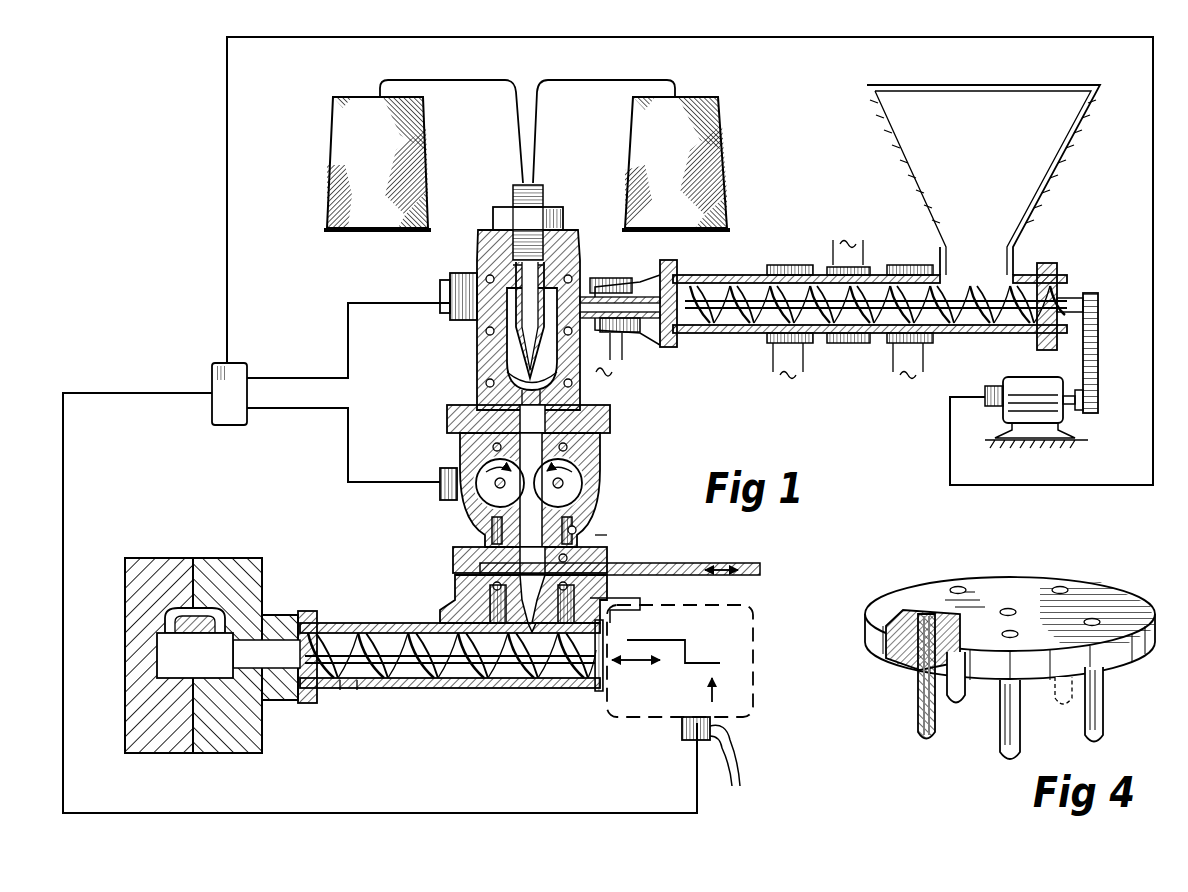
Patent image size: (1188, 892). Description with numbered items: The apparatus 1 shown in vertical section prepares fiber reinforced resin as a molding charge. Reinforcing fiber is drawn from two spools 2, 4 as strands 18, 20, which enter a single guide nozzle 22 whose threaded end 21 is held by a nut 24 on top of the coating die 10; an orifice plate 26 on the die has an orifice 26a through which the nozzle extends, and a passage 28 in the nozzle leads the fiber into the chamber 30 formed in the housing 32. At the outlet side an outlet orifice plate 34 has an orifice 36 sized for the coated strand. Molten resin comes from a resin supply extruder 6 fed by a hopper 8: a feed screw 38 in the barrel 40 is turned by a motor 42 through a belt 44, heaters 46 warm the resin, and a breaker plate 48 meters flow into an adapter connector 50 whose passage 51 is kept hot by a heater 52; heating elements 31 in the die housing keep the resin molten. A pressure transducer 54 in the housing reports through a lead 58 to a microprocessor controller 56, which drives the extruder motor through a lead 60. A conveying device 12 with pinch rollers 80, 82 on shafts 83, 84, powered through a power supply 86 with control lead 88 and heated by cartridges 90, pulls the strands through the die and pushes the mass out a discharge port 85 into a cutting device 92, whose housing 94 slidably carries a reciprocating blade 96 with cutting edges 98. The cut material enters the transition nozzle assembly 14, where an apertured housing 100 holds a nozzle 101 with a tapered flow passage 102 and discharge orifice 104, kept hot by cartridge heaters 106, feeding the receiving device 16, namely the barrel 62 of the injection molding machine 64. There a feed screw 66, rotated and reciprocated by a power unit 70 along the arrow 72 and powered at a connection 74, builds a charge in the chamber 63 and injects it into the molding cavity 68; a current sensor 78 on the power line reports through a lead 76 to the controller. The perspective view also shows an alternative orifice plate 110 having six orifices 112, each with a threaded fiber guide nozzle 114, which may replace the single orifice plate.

In FIG. 1, the apparatus 1 is at (152, 138).
In FIG. 1, the spool of fiber 2 is at (330, 100).
In FIG. 1, the spool of fiber 4 is at (728, 112).
In FIG. 1, the resin supply extruder 6 is at (1062, 274).
In FIG. 1, the feed hopper 8 is at (972, 85).
In FIG. 1, the coating die 10 is at (470, 250).
In FIG. 1, the fiber and resin conveying device 12 is at (445, 428).
In FIG. 1, the transition nozzle assembly 14 is at (455, 595).
In FIG. 1, the receiving device 16 is at (406, 703).
In FIG. 1, the fiber strand 18 is at (459, 80).
In FIG. 1, the fiber strand 20 is at (591, 80).
In FIG. 1, the threaded end 21 is at (531, 185).
In FIG. 1, the guide nozzle 22 is at (514, 322).
In FIG. 1, the nut 24 is at (550, 207).
In FIG. 1, the orifice plate 26 is at (492, 236).
In FIG. 1, the orifice 26a is at (521, 235).
In FIG. 1, the passage 28 is at (530, 395).
In FIG. 1, the chamber 30 is at (512, 348).
In FIG. 1, the electric heating elements 31 is at (500, 275).
In FIG. 1, the housing 32 is at (520, 378).
In FIG. 1, the outlet orifice plate 34 is at (490, 452).
In FIG. 1, the orifice 36 is at (604, 367).
In FIG. 1, the feed screw 38 is at (1000, 325).
In FIG. 1, the extruder barrel 40 is at (963, 334).
In FIG. 1, the motor 42 is at (1050, 408).
In FIG. 1, the belt 44 is at (1092, 368).
In FIG. 1, the electric heaters 46 is at (887, 344).
In FIG. 1, the breaker plate 48 is at (686, 326).
In FIG. 1, the adapter connector 50 is at (655, 336).
In FIG. 1, the internal flow passage 51 is at (634, 333).
In FIG. 1, the electric heater 52 is at (613, 285).
In FIG. 1, the pressure transducer 54 is at (446, 296).
In FIG. 1, the controller 56 is at (212, 374).
In FIG. 1, the lead 58 is at (276, 378).
In FIG. 1, the lead 60 is at (227, 252).
In FIG. 1, the barrel 62 is at (345, 682).
In FIG. 1, the mold charge chamber 63 is at (300, 684).
In FIG. 1, the injection molding machine 64 is at (190, 626).
In FIG. 1, the feed screw 66 is at (380, 682).
In FIG. 1, the molding cavity 68 is at (160, 657).
In FIG. 1, the power unit 70 is at (758, 688).
In FIG. 1, the arrow 72 is at (630, 662).
In FIG. 1, the connection 74 is at (726, 738).
In FIG. 1, the control lead 76 is at (95, 393).
In FIG. 1, the electrical current sensor 78 is at (684, 738).
In FIG. 1, the pinch roller 80 is at (490, 448).
In FIG. 1, the pinch roller 82 is at (570, 450).
In FIG. 1, the pinch roller shaft 83 is at (496, 484).
In FIG. 1, the shaft 84 is at (566, 480).
In FIG. 1, the discharge port 85 is at (490, 528).
In FIG. 1, the power supply 86 is at (440, 480).
In FIG. 1, the control lead 88 is at (268, 408).
In FIG. 1, the heating element 90 is at (468, 521).
In FIG. 1, the cutting device 92 is at (612, 540).
In FIG. 1, the housing 94 is at (618, 560).
In FIG. 1, the cutting blade 96 is at (705, 569).
In FIG. 1, the cutting edges 98 is at (578, 530).
In FIG. 1, the apertured housing 100 is at (470, 592).
In FIG. 1, the nozzle 101 is at (600, 620).
In FIG. 1, the flow passage 102 is at (585, 600).
In FIG. 1, the discharge orifice 104 is at (534, 636).
In FIG. 1, the cartridge heaters 106 is at (487, 640).
In FIG. 4, the orifice plate 110 is at (878, 642).
In FIG. 4, the orifices 112 is at (1010, 632).
In FIG. 4, the fiber guide nozzle 114 is at (918, 720).